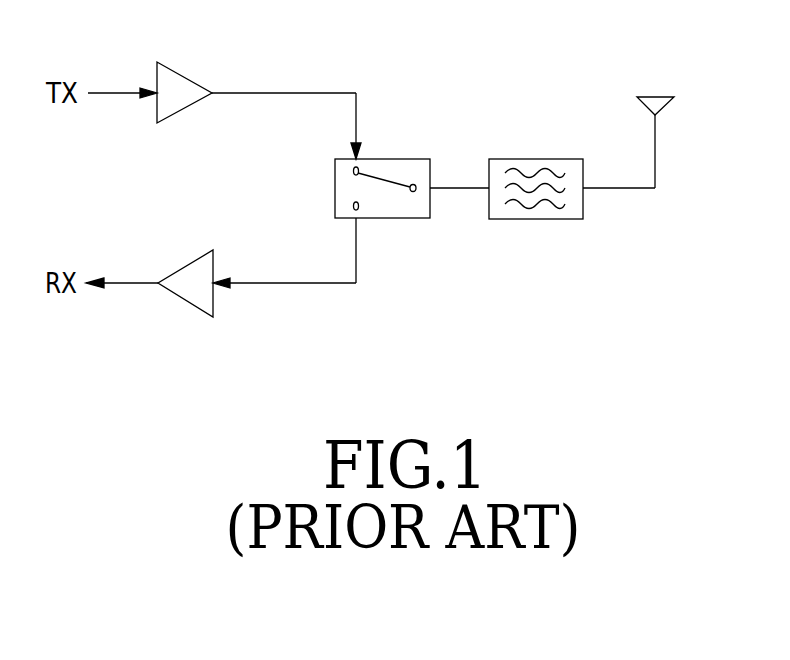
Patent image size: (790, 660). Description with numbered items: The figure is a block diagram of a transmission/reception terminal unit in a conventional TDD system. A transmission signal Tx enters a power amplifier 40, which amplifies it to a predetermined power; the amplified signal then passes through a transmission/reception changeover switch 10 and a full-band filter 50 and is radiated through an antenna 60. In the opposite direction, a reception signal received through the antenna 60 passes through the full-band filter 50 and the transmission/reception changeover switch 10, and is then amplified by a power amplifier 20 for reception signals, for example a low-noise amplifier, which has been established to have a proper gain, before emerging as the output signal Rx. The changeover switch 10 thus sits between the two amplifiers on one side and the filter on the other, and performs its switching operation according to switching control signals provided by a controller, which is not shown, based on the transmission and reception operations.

The transmission/reception changeover switch 10 is at (335, 190).
The power amplifier for reception signals 20 is at (182, 262).
The power amplifier 40 is at (180, 72).
The full-band filter 50 is at (534, 158).
The antenna 60 is at (668, 106).